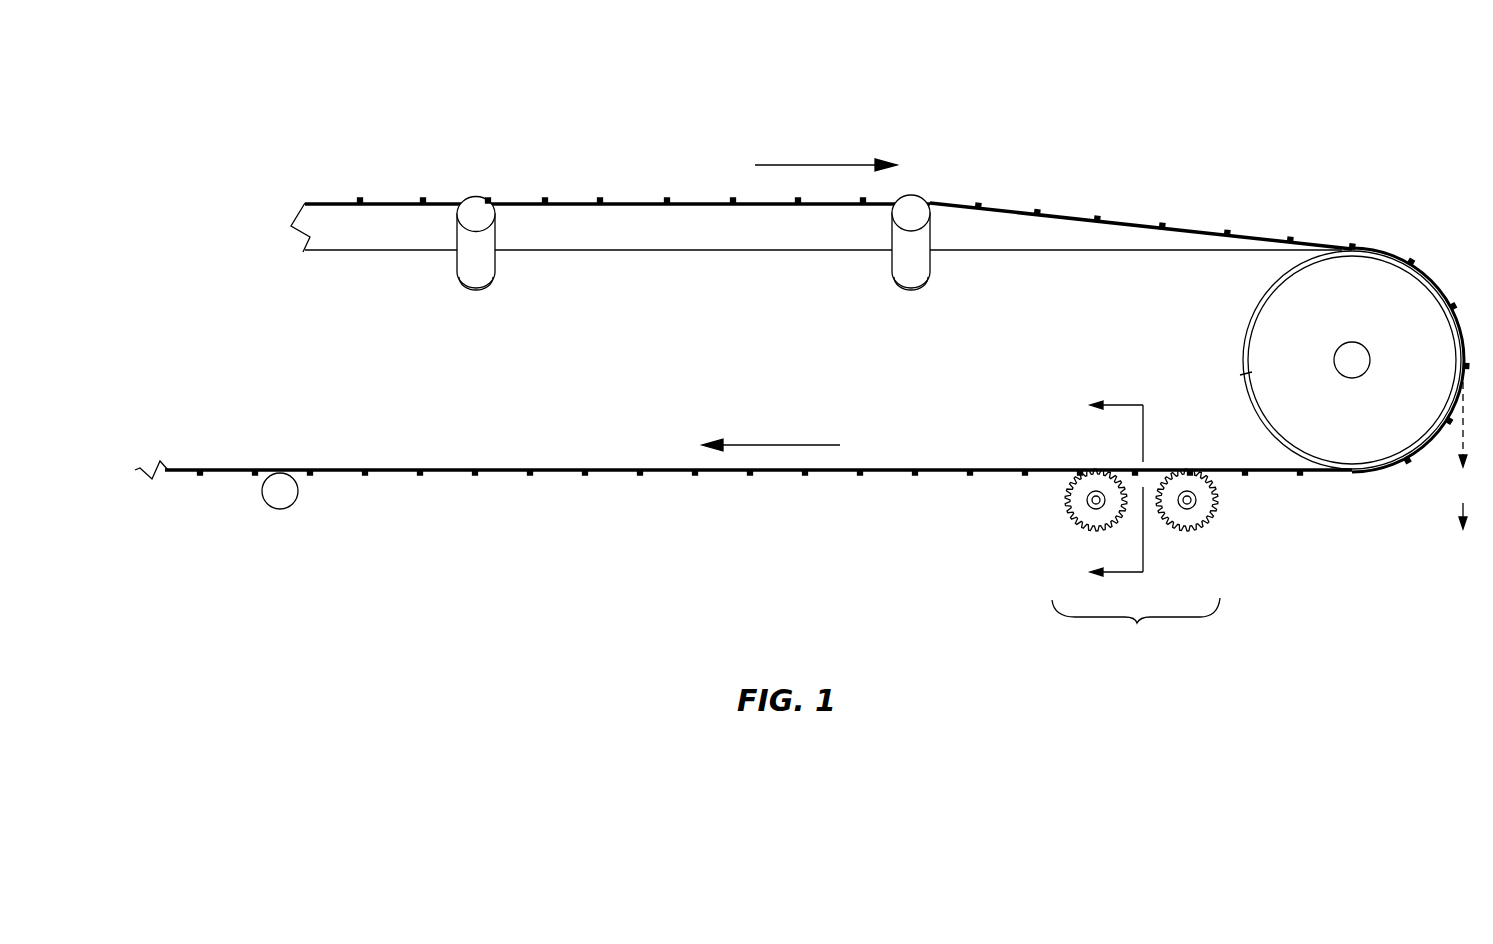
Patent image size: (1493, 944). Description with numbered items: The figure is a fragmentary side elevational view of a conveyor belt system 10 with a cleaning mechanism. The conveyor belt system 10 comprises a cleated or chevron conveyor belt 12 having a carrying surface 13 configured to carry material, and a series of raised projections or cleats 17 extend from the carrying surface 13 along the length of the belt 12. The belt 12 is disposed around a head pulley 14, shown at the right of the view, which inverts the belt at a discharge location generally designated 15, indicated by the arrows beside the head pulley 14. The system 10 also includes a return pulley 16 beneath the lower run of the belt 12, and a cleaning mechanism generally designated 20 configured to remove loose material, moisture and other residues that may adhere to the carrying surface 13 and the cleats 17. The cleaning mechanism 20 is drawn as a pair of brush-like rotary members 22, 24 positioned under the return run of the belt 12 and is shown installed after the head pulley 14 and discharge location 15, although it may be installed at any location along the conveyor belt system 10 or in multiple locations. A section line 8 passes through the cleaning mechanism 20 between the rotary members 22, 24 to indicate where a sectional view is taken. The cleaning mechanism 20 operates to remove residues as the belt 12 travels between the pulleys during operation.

The conveyor belt system 10 is at (493, 110).
The conveyor belt 12 is at (555, 482).
The surface 13 is at (1188, 228).
The head pulley 14 is at (1283, 342).
The discharge location 15 is at (1443, 532).
The return pulley 16 is at (300, 491).
The cleats 17 is at (358, 198).
The cleaning mechanism 20 is at (1136, 625).
The brush 22 is at (1222, 497).
The brush 24 is at (1078, 498).
The section line 8- 8 is at (1102, 491).